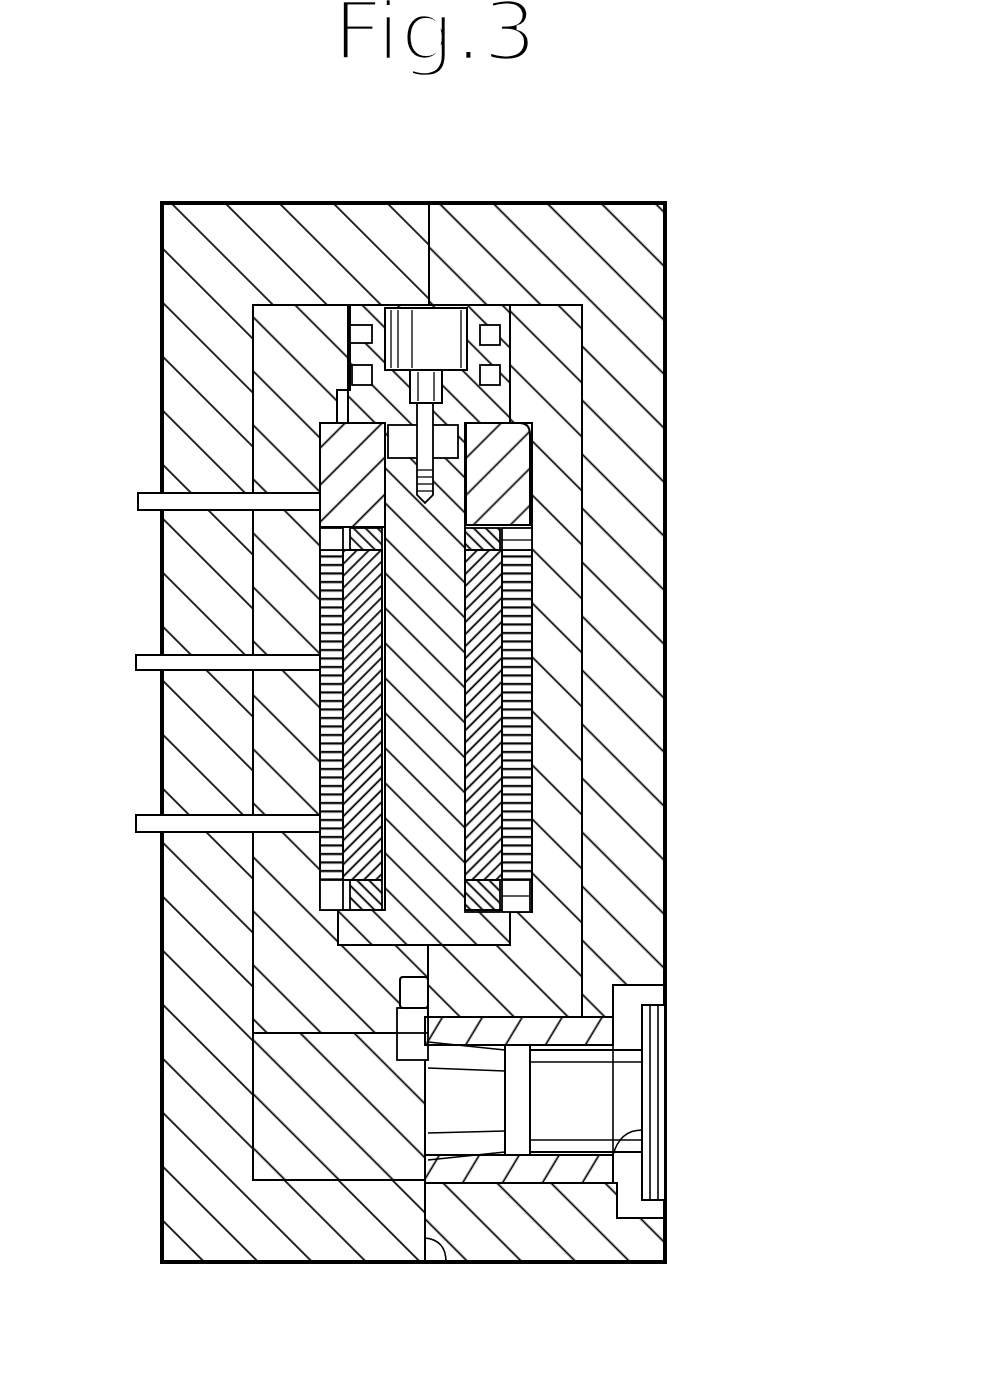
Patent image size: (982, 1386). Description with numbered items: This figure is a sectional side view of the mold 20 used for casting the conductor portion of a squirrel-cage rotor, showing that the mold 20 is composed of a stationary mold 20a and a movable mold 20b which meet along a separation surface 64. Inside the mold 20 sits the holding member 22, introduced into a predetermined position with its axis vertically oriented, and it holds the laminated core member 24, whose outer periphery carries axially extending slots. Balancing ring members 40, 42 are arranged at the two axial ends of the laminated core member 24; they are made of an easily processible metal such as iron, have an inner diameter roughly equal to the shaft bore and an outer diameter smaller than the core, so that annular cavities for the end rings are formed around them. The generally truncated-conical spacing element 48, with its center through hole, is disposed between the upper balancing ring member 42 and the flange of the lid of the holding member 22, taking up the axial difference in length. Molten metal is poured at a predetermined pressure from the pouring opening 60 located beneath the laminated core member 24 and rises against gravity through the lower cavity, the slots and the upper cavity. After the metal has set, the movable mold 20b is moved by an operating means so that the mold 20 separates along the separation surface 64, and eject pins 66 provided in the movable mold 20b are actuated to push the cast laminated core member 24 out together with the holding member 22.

The mold 20 is at (486, 731).
The stationary mold 20a is at (612, 203).
The movable mold 20b is at (213, 203).
The holding member 22 is at (417, 728).
The laminated core member 24 is at (530, 725).
The balancing ring member 40 is at (530, 900).
The balancing ring member 42 is at (532, 542).
The spacing element 48 is at (335, 470).
The pouring opening 60 is at (620, 1148).
The separation surface 64 is at (445, 1262).
The eject pins 66 is at (195, 510).